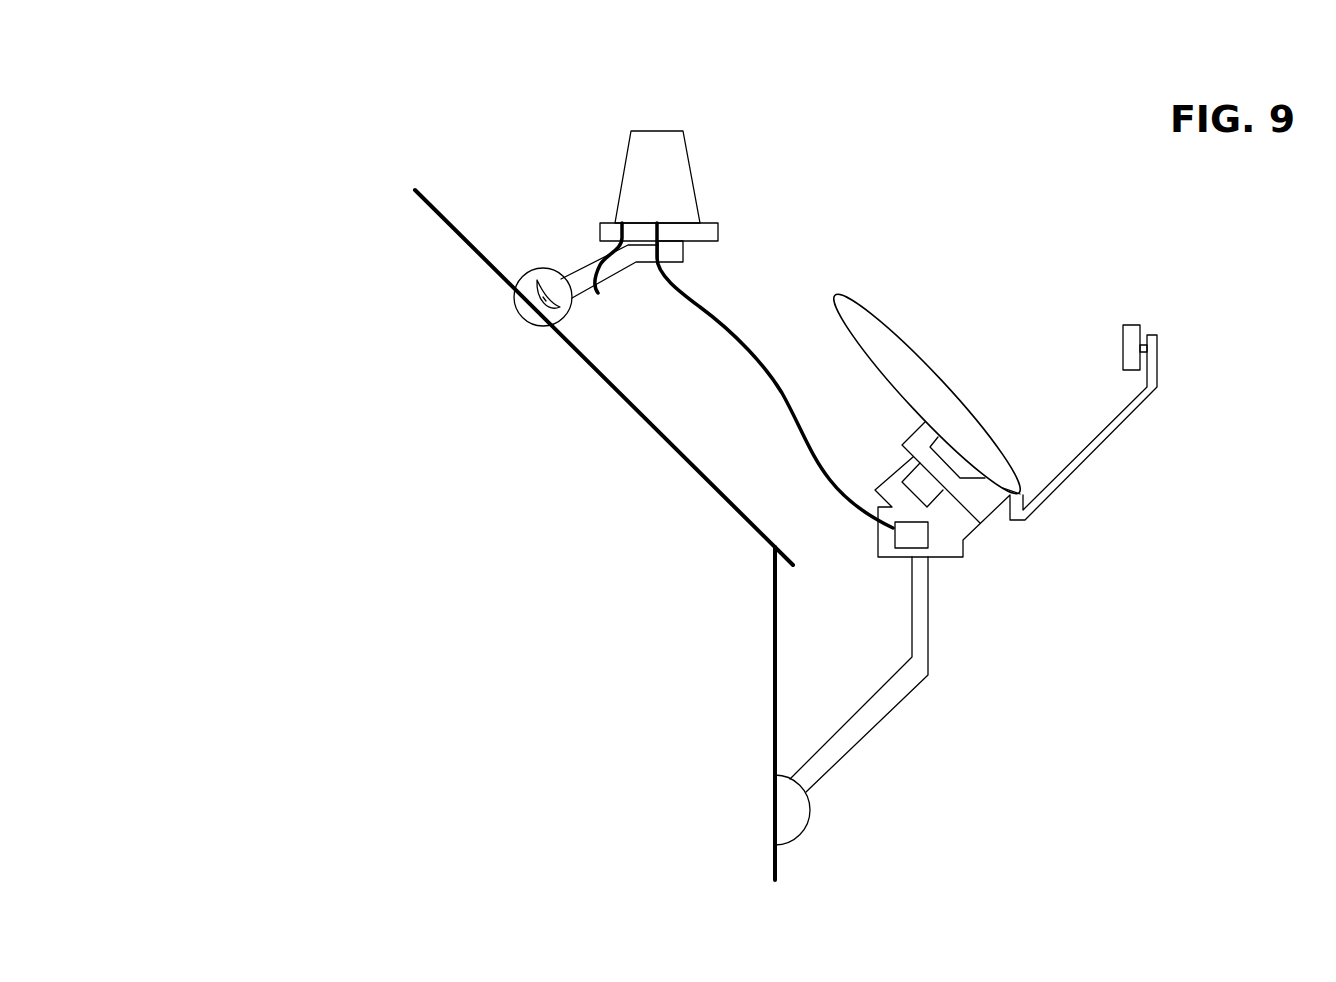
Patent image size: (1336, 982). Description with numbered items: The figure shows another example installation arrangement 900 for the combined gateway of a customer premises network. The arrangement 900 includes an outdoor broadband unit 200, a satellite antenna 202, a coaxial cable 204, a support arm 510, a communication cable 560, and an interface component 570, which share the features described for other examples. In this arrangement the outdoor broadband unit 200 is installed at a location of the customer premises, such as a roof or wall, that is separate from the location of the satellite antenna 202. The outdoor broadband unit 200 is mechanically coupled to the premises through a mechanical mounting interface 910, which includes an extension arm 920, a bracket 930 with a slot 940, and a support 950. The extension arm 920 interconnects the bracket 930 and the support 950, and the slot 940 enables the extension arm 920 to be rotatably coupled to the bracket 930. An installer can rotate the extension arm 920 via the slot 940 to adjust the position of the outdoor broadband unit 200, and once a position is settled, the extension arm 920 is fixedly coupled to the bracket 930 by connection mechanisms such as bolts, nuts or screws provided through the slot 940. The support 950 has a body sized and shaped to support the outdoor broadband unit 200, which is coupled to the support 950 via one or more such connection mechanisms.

The installation arrangement 900 is at (282, 75).
The mechanical mounting interface 910 is at (736, 208).
The outdoor broadband unit 200 is at (632, 173).
The coaxial cable 204 is at (598, 249).
The support 950 is at (718, 231).
The extension arm 920 is at (673, 255).
The bracket 930 is at (516, 290).
The slot 940 is at (551, 322).
The communication cable 560 is at (780, 395).
The satellite antenna 202 is at (908, 372).
The interface component 570 is at (920, 539).
The support arm 510 is at (884, 692).